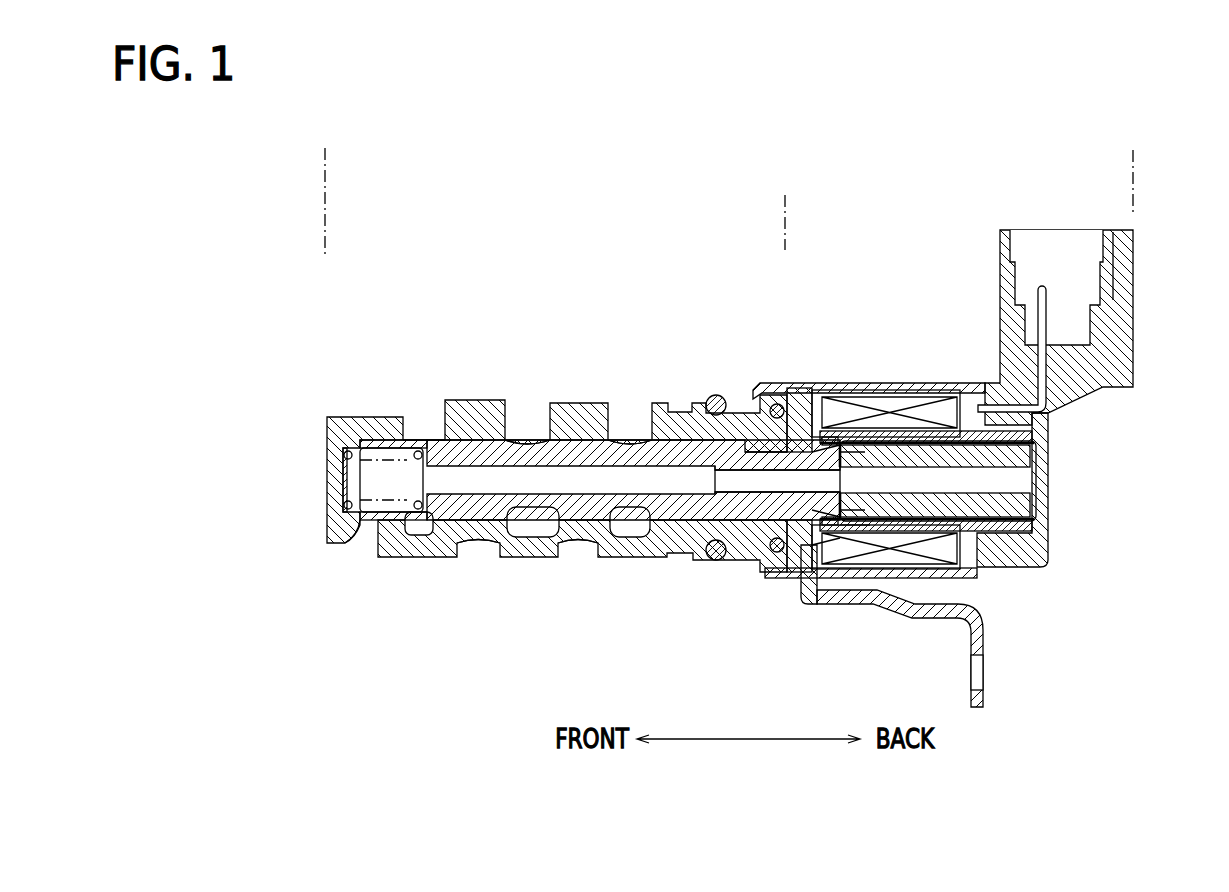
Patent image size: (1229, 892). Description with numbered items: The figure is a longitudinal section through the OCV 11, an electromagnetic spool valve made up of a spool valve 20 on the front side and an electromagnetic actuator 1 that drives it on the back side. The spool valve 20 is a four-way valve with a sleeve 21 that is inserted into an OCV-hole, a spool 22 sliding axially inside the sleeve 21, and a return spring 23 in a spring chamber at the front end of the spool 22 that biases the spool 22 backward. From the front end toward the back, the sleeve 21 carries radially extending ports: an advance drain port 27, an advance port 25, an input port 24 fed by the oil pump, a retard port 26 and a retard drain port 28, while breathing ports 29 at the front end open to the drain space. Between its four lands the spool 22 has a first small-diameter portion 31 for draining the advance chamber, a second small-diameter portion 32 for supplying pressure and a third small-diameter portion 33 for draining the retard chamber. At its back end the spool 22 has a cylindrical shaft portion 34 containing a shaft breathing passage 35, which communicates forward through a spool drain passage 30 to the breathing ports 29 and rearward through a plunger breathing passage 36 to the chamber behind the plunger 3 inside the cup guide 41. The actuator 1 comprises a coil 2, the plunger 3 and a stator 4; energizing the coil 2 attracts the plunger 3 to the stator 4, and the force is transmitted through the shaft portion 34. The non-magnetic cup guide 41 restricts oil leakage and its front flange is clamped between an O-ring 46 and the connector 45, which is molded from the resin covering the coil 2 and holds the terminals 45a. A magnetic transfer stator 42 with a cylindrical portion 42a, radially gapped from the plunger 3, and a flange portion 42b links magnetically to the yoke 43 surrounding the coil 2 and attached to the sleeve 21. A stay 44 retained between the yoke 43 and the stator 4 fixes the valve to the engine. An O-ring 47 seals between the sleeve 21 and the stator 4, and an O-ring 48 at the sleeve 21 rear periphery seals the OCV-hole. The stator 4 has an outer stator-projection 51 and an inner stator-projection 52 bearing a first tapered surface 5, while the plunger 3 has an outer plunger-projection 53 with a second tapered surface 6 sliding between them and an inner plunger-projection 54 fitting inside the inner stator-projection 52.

The electromagnetic actuator 1 is at (1121, 206).
The coil 2 is at (938, 412).
The plunger 3 is at (963, 417).
The stator 4 is at (795, 428).
The first tapered surface 5 is at (814, 548).
The second tapered surface 6 is at (853, 527).
The OCV 11 is at (325, 160).
The spool valve 20 is at (325, 202).
The sleeve 21 is at (375, 440).
The spool 22 is at (342, 418).
The return spring 23 is at (367, 473).
The input port 24 is at (520, 440).
The advance port 25 is at (476, 548).
The retard port 26 is at (580, 548).
The advance drain port 27 is at (428, 415).
The retard drain port 28 is at (630, 440).
The breathing ports 29 is at (356, 515).
The spool drain passage 30 is at (470, 470).
The first small-diameter portion 31 is at (460, 522).
The second small-diameter portion 32 is at (527, 537).
The third small-diameter portion 33 is at (630, 537).
The shaft portion 34 is at (778, 407).
The shaft breathing passage 35 is at (752, 448).
The plunger breathing passage 36 is at (1020, 481).
The cup guide 41 is at (1035, 490).
The magnetic transfer stator 42 is at (926, 531).
The cylindrical portion 42a is at (1040, 566).
The flange portion 42b is at (895, 591).
The yoke 43 is at (920, 385).
The stay 44 is at (983, 650).
The connector 45 is at (1091, 298).
The terminals 45a is at (1060, 322).
The O-ring 46 is at (808, 582).
The O-ring 47 is at (779, 553).
The O-ring 48 is at (716, 561).
The outer stator-projection 51 is at (813, 390).
The inner stator-projection 52 is at (837, 445).
The outer plunger-projection 53 is at (858, 446).
The inner plunger-projection 54 is at (870, 448).